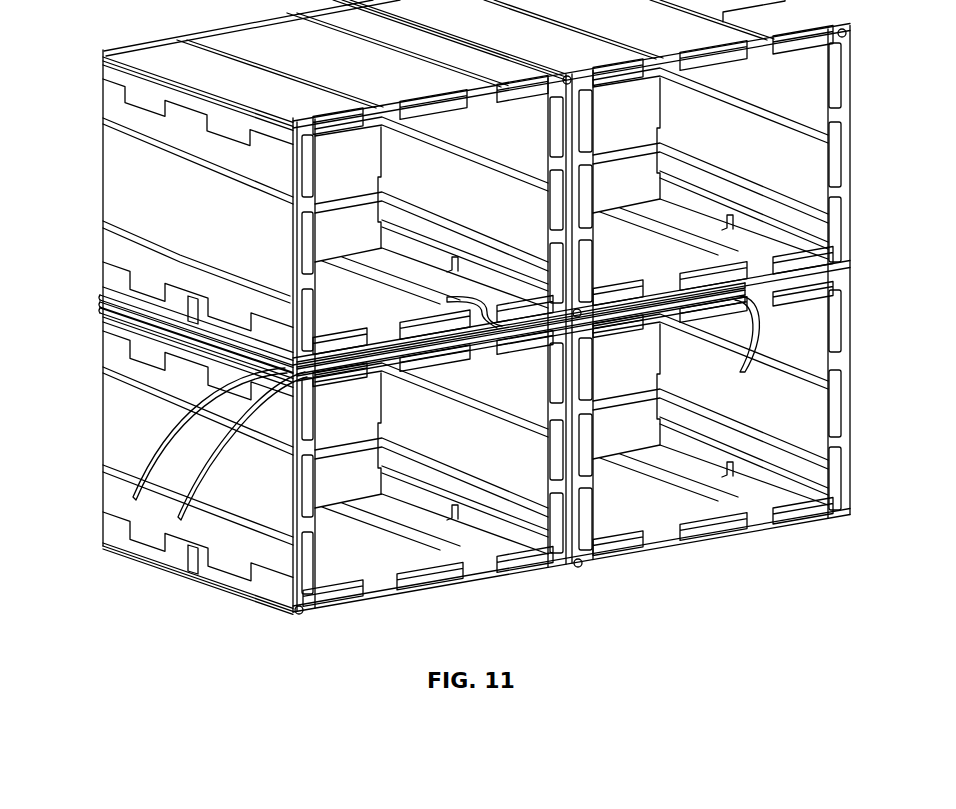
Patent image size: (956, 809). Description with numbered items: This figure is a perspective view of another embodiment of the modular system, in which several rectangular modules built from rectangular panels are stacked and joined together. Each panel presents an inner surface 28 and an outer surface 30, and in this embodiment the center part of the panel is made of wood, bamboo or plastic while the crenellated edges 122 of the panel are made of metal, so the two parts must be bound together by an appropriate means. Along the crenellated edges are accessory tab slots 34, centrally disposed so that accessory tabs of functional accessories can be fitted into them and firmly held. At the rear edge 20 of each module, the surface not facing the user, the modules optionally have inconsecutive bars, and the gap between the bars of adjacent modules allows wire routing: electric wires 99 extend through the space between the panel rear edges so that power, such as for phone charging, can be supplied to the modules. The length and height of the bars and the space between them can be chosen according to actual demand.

The rear edge 20 is at (305, 202).
The inner surface 28 is at (538, 228).
The outer surface 30 is at (214, 235).
The accessory tab slots 34 is at (450, 262).
The electric wires 99 is at (218, 468).
The crenellated edges 122 is at (120, 532).